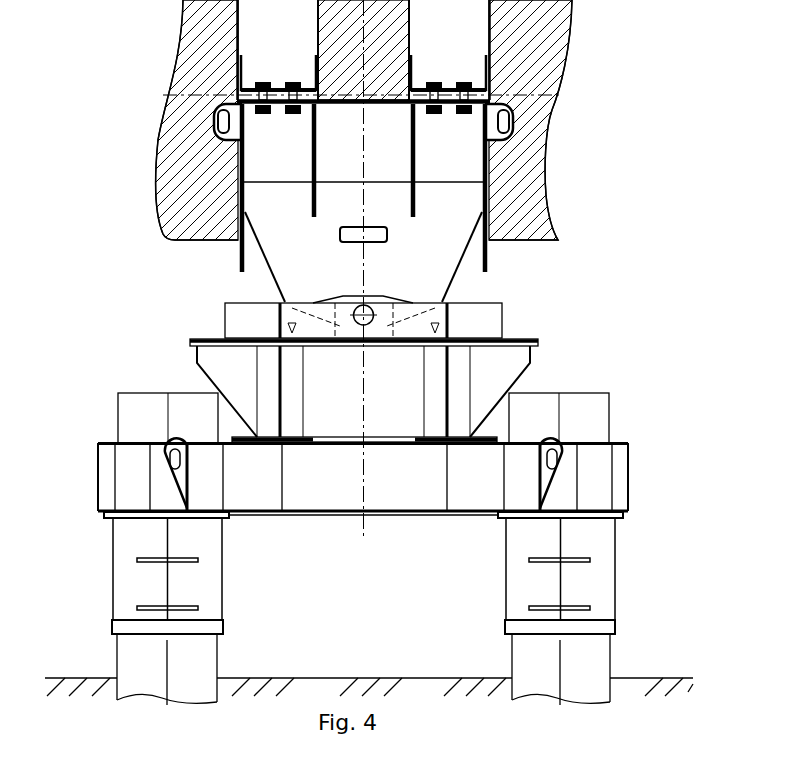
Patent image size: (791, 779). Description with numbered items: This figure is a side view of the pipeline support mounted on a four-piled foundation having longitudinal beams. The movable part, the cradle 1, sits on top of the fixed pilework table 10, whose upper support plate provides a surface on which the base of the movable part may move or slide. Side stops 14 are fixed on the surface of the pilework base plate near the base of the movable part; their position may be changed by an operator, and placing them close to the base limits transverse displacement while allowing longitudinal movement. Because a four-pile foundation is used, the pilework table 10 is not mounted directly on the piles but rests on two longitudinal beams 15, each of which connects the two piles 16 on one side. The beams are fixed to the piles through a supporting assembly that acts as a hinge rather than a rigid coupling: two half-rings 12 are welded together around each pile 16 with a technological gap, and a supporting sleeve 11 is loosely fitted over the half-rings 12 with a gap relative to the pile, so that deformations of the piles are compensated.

The cradle 1 is at (460, 168).
The side stops 14 is at (473, 323).
The pilework table 10 is at (485, 378).
The longitudinal beam 15 is at (472, 478).
The pile 16 is at (593, 418).
The supporting sleeve 11 is at (602, 548).
The half-rings 12 is at (590, 628).